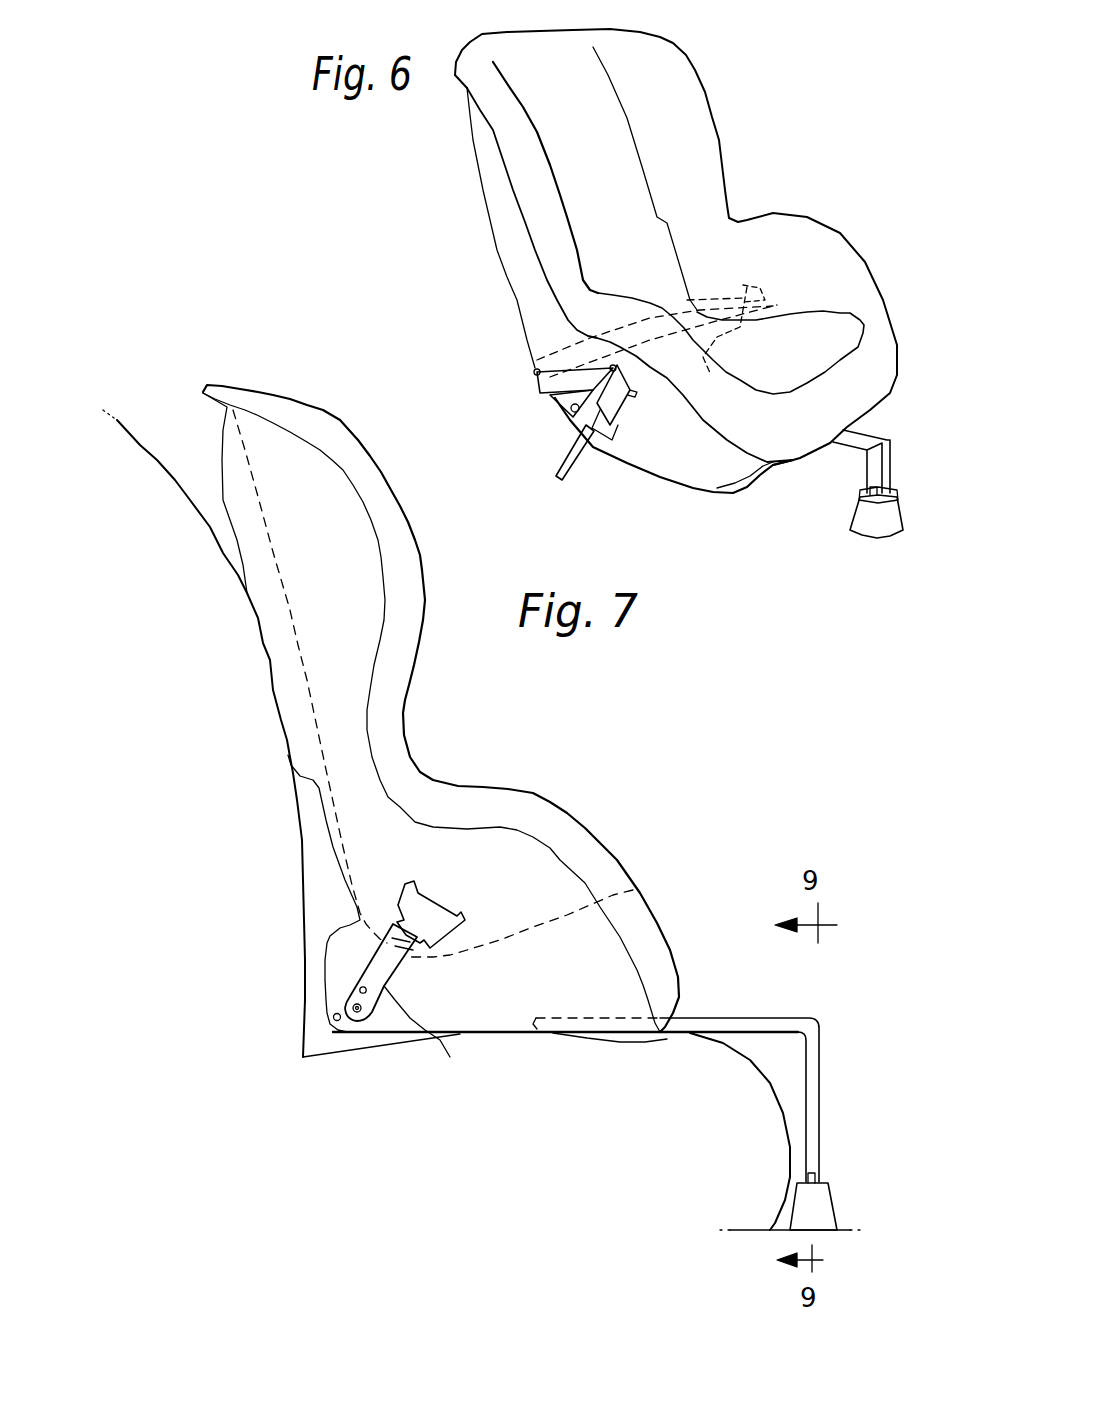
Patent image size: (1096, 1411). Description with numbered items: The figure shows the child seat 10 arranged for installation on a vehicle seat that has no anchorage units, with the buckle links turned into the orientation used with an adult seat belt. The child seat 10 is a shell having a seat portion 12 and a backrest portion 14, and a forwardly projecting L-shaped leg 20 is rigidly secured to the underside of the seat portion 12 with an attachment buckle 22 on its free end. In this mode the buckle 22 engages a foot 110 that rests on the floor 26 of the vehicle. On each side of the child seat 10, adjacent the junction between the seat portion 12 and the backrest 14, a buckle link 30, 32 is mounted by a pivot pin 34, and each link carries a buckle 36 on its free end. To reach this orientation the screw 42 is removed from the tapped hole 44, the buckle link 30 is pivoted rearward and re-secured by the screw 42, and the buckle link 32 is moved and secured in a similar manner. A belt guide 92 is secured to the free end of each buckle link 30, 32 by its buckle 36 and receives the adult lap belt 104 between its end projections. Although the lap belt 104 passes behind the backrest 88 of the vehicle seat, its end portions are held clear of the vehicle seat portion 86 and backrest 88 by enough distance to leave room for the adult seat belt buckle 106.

In FIG. 6, the child seat 10 is at (703, 61).
In FIG. 7, the child seat 10 is at (433, 580).
In FIG. 6, the seat portion 12 is at (823, 343).
In FIG. 7, the seat portion 12 is at (627, 1038).
In FIG. 6, the backrest portion 14 is at (567, 95).
In FIG. 7, the backrest portion 14 is at (233, 460).
In FIG. 6, the L-shaped leg 20 is at (867, 430).
In FIG. 7, the L-shaped leg 20 is at (762, 1023).
In FIG. 6, the attachment buckle 22 is at (887, 487).
In FIG. 7, the attachment buckle 22 is at (817, 1177).
In FIG. 7, the floor 26 is at (748, 1230).
In FIG. 6, the buckle link 30 is at (555, 393).
In FIG. 7, the buckle link 30 is at (372, 1040).
In FIG. 6, the buckle link 32 is at (710, 373).
In FIG. 6, the pivot pin 34 is at (570, 410).
In FIG. 7, the pivot pin 34 is at (352, 1024).
In FIG. 7, the buckle 36 is at (426, 1037).
In FIG. 7, the screw 42 is at (358, 989).
In FIG. 7, the tapped hole 44 is at (333, 1021).
In FIG. 7, the seat portion of vehicle seat 86 is at (777, 1088).
In FIG. 7, the backrest of vehicle seat 88 is at (127, 420).
In FIG. 7, the belt guide 92 is at (403, 887).
In FIG. 6, the adult lap belt 104 is at (540, 375).
In FIG. 6, the adult seat belt buckle 106 is at (590, 433).
In FIG. 6, the foot 110 is at (890, 525).
In FIG. 7, the foot 110 is at (820, 1212).